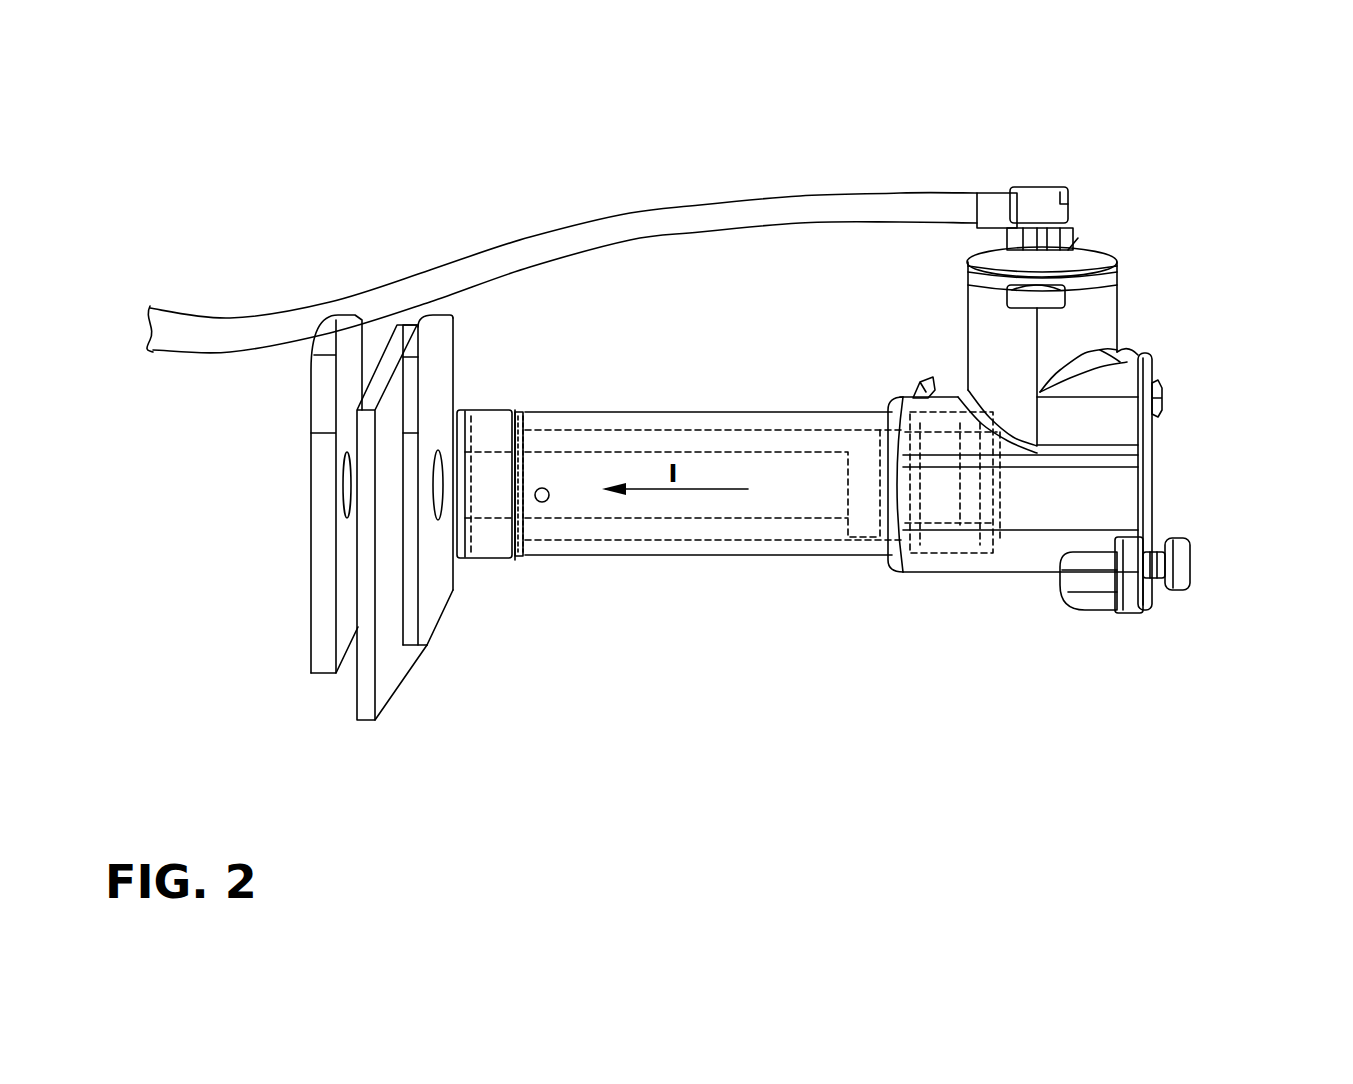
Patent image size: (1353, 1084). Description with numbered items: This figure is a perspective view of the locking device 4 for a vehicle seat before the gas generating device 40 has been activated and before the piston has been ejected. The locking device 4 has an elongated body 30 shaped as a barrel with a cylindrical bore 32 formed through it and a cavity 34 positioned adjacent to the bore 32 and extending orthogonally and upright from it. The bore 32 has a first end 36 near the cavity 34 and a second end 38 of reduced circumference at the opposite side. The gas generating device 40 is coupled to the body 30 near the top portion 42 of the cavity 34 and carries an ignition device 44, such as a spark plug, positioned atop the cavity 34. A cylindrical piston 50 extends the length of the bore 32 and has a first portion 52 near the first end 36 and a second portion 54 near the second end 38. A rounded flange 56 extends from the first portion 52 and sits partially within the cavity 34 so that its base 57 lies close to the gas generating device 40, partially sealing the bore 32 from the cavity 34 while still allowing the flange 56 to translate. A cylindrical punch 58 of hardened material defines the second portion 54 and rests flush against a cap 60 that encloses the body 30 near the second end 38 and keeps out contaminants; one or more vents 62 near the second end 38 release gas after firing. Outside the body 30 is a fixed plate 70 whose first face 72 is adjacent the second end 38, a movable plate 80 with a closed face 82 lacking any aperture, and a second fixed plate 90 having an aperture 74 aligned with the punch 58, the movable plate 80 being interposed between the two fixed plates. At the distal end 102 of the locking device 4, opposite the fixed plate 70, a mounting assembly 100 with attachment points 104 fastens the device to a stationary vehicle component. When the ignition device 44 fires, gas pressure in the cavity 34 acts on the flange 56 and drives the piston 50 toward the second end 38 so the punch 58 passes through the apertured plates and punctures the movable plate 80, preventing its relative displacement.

The locking device 4 is at (1088, 172).
The elongated body 30 is at (961, 585).
The cylindrical bore 32 is at (700, 530).
The cavity 34 is at (1070, 490).
The first end 36 is at (878, 493).
The second end 38 is at (482, 560).
The gas generating device 40 is at (1045, 245).
The top portion 42 is at (982, 298).
The ignition device 44 is at (1062, 296).
The cylindrical piston 50 is at (760, 502).
The first portion 52 is at (847, 498).
The second portion 54 is at (547, 517).
The rounded flange 56 is at (863, 458).
The base 57 is at (987, 485).
The cylindrical punch 58 is at (487, 463).
The cap 60 is at (495, 540).
The vent 62 is at (545, 488).
The fixed plate 70 is at (444, 328).
The first face 72 is at (432, 522).
The aperture 74 is at (453, 390).
The movable plate 80 is at (388, 390).
The closed face 82 is at (387, 660).
The second fixed plate 90 is at (343, 357).
The mounting assembly 100 is at (1172, 475).
The distal end 102 is at (1188, 510).
The attachment points 104 is at (1192, 562).